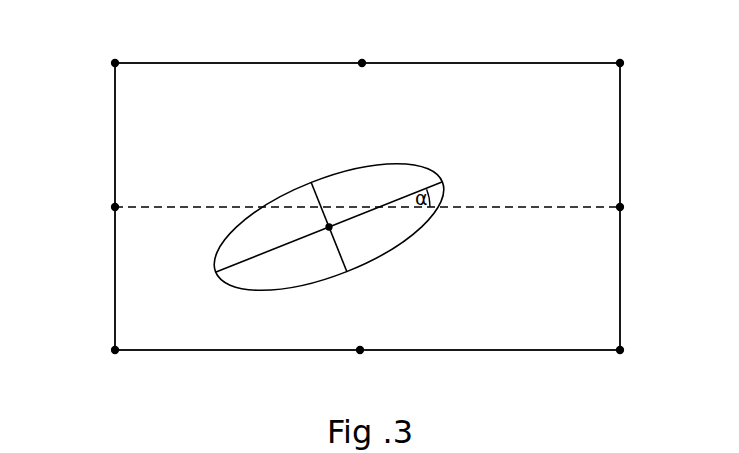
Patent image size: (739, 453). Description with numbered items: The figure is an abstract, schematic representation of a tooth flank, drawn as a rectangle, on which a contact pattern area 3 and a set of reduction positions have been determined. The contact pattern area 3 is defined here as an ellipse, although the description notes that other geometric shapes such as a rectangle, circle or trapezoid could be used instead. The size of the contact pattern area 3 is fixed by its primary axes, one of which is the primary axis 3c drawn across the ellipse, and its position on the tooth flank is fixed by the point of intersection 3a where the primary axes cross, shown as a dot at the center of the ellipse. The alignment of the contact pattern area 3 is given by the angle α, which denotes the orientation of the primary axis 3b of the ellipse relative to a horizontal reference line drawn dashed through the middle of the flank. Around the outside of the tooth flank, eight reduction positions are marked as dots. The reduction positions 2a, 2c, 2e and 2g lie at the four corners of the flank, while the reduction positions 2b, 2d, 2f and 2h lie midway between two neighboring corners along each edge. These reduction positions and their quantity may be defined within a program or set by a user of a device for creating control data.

The reduction position 2a is at (114, 63).
The reduction position 2b is at (364, 62).
The reduction position 2c is at (622, 63).
The reduction position 2d is at (623, 205).
The reduction position 2e is at (623, 349).
The reduction position 2f is at (362, 352).
The reduction position 2g is at (113, 349).
The reduction position 2h is at (113, 207).
The contact pattern area 3 is at (230, 294).
The point of intersection 3a is at (329, 228).
The primary axis 3b is at (348, 222).
The primary axis 3c is at (308, 194).